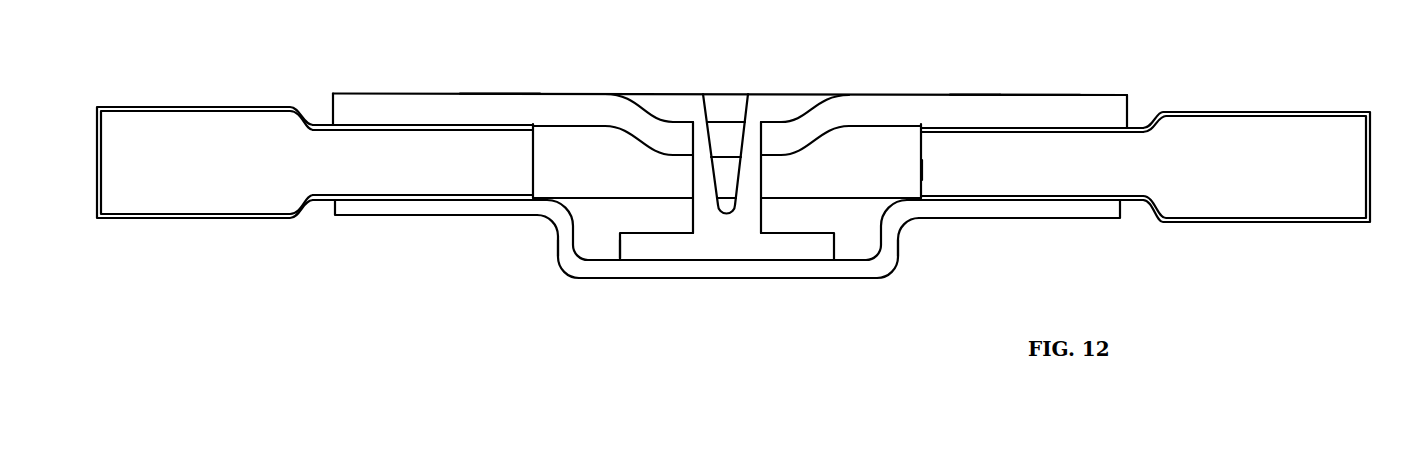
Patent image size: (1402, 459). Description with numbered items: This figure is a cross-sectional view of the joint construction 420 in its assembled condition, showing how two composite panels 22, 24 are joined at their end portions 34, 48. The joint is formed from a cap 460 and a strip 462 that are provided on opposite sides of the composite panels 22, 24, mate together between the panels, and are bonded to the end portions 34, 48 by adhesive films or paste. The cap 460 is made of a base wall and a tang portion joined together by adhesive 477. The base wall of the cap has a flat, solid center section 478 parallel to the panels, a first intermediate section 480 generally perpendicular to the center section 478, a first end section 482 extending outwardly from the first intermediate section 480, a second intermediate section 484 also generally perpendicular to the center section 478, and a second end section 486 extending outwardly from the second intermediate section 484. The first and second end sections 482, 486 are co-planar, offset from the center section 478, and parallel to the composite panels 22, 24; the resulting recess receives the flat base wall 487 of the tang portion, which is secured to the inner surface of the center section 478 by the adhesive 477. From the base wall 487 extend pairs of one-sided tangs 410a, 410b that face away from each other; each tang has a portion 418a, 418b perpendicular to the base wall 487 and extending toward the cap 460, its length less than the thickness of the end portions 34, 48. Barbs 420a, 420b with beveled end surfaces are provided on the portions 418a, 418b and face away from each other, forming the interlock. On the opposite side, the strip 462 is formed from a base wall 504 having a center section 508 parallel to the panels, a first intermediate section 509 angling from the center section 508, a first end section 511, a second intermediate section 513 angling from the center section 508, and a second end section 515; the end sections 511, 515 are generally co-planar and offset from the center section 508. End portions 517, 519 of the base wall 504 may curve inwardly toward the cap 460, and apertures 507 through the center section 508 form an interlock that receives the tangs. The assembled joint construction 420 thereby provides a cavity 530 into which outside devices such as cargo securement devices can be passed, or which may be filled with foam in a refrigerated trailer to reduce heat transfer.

The composite panel 22 is at (168, 96).
The composite panel 24 is at (1238, 103).
The end portion 34 is at (373, 180).
The end portion 48 is at (940, 152).
The joint construction 420 is at (732, 298).
The barb 420a is at (694, 121).
The barb 420b is at (760, 121).
The one-sided tang 410a is at (703, 190).
The one-sided tang 410b is at (757, 190).
The portion 418a is at (700, 160).
The portion 418b is at (755, 160).
The cap 460 is at (955, 230).
The strip 462 is at (985, 90).
The adhesive 477 is at (793, 263).
The center section 478 is at (709, 267).
The first intermediate section 480 is at (567, 248).
The first end section 482 is at (442, 212).
The second intermediate section 484 is at (890, 247).
The second end section 486 is at (1045, 220).
The base wall 487 is at (642, 243).
The base wall 504 is at (505, 105).
The aperture 507 is at (706, 125).
The center section 508 is at (783, 133).
The first intermediate section 509 is at (619, 99).
The first end section 511 is at (451, 102).
The second intermediate section 513 is at (831, 121).
The second end section 515 is at (1053, 105).
The end portion 517 is at (338, 103).
The end portion 519 is at (1120, 108).
The cavity 530 is at (550, 140).